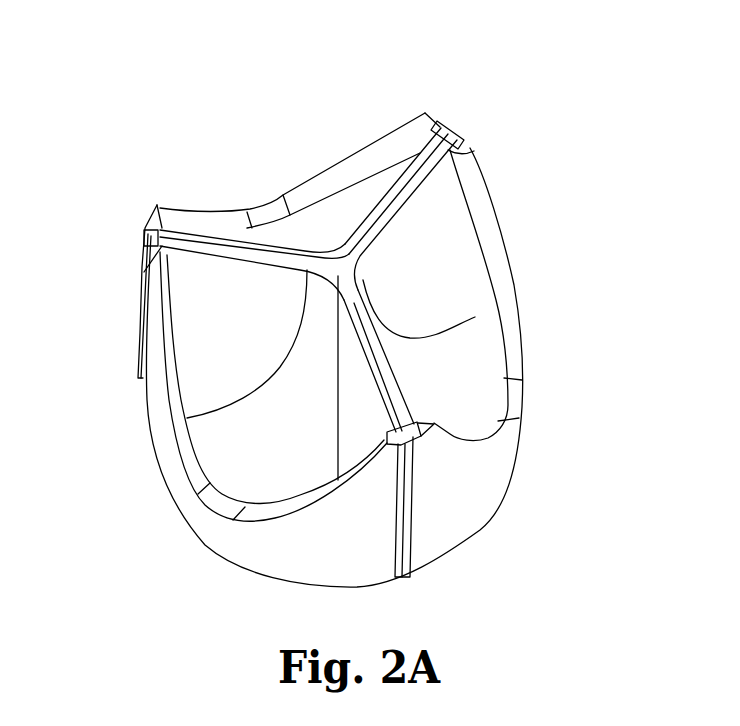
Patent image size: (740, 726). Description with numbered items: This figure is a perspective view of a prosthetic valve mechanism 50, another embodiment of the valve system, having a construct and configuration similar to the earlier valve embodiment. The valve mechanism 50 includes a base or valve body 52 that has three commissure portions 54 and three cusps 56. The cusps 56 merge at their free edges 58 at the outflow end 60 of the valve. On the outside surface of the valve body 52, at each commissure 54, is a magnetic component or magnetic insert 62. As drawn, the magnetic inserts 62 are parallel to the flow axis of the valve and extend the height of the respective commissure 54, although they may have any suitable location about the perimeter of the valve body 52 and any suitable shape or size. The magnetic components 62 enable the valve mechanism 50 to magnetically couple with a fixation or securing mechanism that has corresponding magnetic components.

The valve mechanism 50 is at (542, 227).
The valve body 52 is at (459, 487).
The commissure portion 54 is at (408, 143).
The cusp 56 is at (191, 312).
The free edge 58 is at (226, 236).
The outflow end 60 is at (470, 143).
The magnetic insert 62 is at (455, 128).